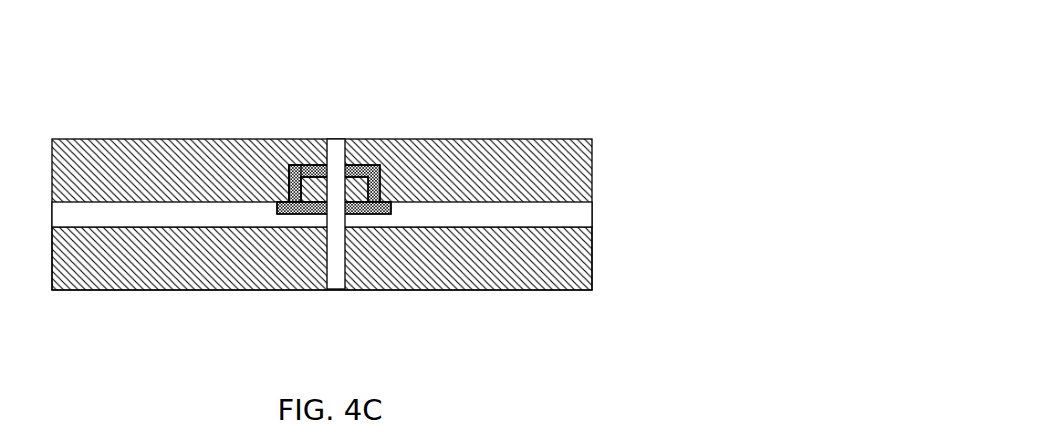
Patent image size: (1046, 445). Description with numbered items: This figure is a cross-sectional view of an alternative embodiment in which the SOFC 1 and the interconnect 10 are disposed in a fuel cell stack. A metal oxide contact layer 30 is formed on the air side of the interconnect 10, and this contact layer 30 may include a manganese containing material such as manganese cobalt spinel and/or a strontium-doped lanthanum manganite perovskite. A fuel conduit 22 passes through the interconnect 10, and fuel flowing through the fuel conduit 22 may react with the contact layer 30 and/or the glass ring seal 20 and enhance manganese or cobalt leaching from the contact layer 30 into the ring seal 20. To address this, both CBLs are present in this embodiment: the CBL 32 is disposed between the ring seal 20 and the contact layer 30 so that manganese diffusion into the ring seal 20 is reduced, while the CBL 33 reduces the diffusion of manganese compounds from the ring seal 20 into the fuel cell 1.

The SOFC 1 is at (592, 139).
The interconnect 10 is at (592, 258).
The ring seal 20 is at (373, 185).
The fuel conduit 22 is at (335, 139).
The contact layer 30 is at (592, 213).
The CBL 32 is at (390, 207).
The CBL 33 is at (287, 180).